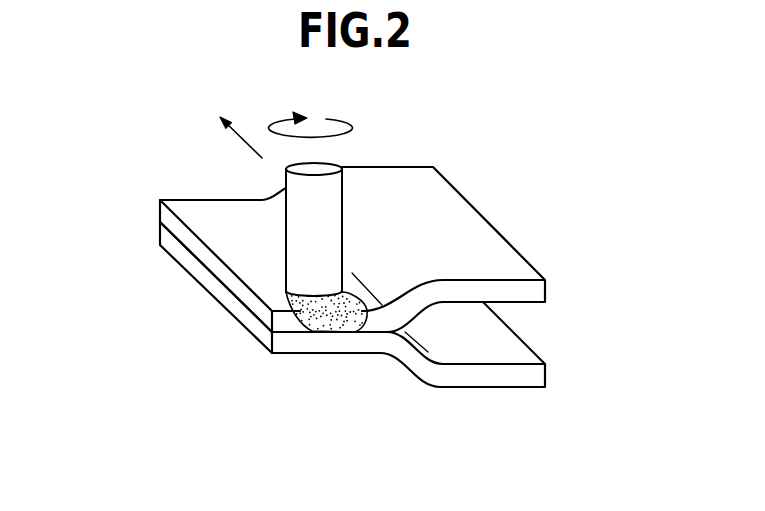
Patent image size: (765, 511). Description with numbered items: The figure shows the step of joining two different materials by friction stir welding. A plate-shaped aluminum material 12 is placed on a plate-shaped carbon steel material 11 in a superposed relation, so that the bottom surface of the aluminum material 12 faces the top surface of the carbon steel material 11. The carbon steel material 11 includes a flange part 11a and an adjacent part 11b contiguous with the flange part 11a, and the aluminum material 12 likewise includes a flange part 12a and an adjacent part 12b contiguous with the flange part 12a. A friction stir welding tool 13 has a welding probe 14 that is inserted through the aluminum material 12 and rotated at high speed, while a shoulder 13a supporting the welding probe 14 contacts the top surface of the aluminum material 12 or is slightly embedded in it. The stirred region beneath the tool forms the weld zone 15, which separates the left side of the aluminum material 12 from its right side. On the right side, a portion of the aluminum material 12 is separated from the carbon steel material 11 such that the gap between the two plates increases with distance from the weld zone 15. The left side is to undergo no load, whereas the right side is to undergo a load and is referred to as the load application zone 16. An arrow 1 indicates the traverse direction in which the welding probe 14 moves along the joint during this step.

The arrow indicating traverse direction 1 is at (240, 136).
The carbon steel material 11 is at (352, 343).
The flange part 11a is at (288, 352).
The adjacent part 11b is at (438, 384).
The aluminum material 12 is at (338, 249).
The flange part 12a is at (195, 211).
The adjacent part 12b is at (443, 288).
The friction stir welding tool 13 is at (301, 208).
The shoulder 13a is at (287, 288).
The welding probe 14 is at (272, 314).
The weld zone 15 is at (343, 318).
The load application zone 16 is at (407, 308).